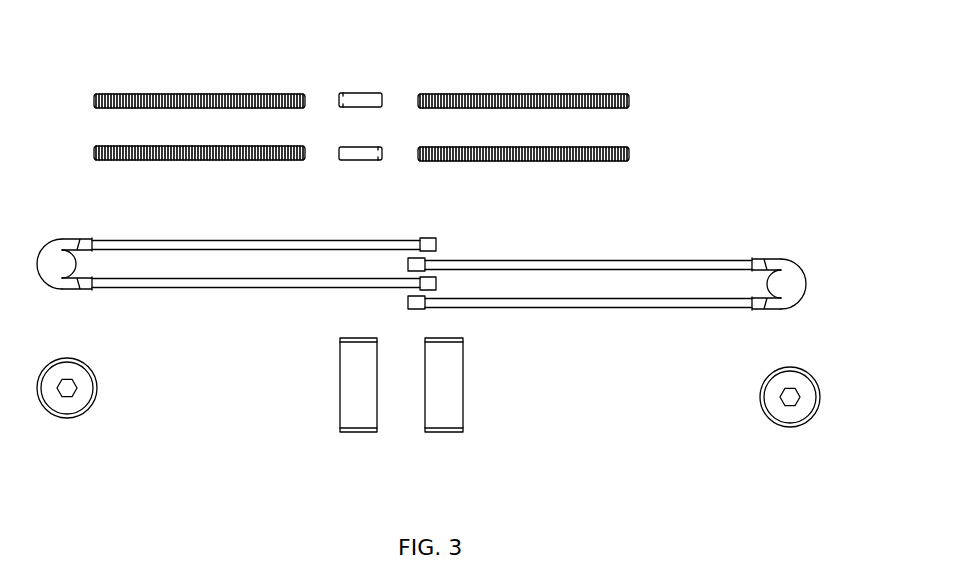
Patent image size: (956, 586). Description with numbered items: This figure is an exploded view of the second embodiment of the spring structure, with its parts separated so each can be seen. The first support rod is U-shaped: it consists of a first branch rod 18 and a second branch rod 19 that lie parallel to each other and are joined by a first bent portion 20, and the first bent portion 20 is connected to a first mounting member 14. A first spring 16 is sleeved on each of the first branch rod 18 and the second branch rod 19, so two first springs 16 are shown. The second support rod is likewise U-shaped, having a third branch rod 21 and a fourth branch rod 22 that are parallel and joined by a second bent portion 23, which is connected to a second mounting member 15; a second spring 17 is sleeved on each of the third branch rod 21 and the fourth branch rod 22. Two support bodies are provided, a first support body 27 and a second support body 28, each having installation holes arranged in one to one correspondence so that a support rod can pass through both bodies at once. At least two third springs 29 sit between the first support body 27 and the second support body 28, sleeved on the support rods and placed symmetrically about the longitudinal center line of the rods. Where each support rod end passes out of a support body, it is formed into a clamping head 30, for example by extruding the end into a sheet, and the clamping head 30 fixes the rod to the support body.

The first mounting member 14 is at (80, 403).
The second mounting member 15 is at (793, 412).
The first spring 16 is at (243, 150).
The second spring 17 is at (524, 151).
The first branch rod 18 is at (233, 247).
The second branch rod 19 is at (145, 282).
The first bent portion 20 is at (65, 242).
The third branch rod 21 is at (515, 265).
The fourth branch rod 22 is at (540, 302).
The second bent portion 23 is at (778, 260).
The first support body 27 is at (356, 408).
The second support body 28 is at (440, 408).
The third spring 29 is at (357, 98).
The clamping head 30 is at (430, 240).